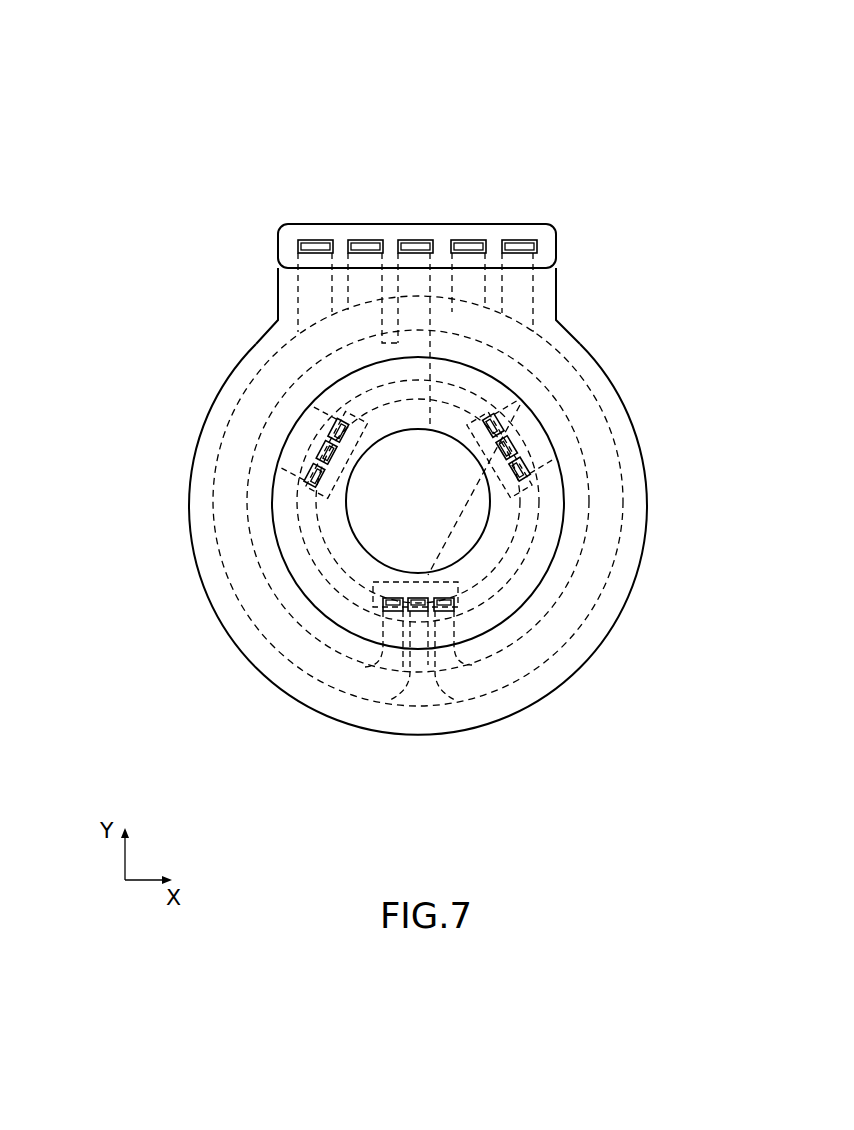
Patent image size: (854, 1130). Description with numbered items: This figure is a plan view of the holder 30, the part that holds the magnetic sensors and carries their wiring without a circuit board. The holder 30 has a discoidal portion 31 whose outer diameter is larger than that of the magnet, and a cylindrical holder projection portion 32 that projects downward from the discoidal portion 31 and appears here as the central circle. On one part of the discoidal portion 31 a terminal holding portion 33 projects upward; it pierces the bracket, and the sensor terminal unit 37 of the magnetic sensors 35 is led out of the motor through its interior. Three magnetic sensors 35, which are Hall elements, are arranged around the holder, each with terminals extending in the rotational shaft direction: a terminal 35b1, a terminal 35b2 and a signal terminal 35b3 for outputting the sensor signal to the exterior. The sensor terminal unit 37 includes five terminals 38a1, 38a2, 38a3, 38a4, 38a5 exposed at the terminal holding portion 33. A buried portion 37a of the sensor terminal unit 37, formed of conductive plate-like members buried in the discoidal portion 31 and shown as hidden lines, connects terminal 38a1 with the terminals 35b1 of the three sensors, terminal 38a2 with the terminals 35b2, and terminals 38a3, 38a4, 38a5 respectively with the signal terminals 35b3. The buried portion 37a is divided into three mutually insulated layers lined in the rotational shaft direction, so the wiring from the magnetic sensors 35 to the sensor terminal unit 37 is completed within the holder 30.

The holder 30 is at (58, 71).
The discoidal portion 31 is at (558, 672).
The holder projection portion 32 is at (497, 540).
The terminal holding portion 33 is at (288, 242).
The magnetic sensor 35 is at (517, 464).
The terminal of the magnetic sensor 35b1 is at (300, 478).
The terminal of the magnetic sensor 35b2 is at (312, 450).
The signal terminal of the magnetic sensor 35b3 is at (327, 427).
The sensor terminal unit 37 is at (541, 229).
The buried portion 37a is at (347, 689).
The terminal 38a1 is at (525, 240).
The terminal 38a2 is at (317, 240).
The terminal 38a3 is at (368, 240).
The terminal 38a4 is at (414, 240).
The terminal 38a5 is at (473, 240).